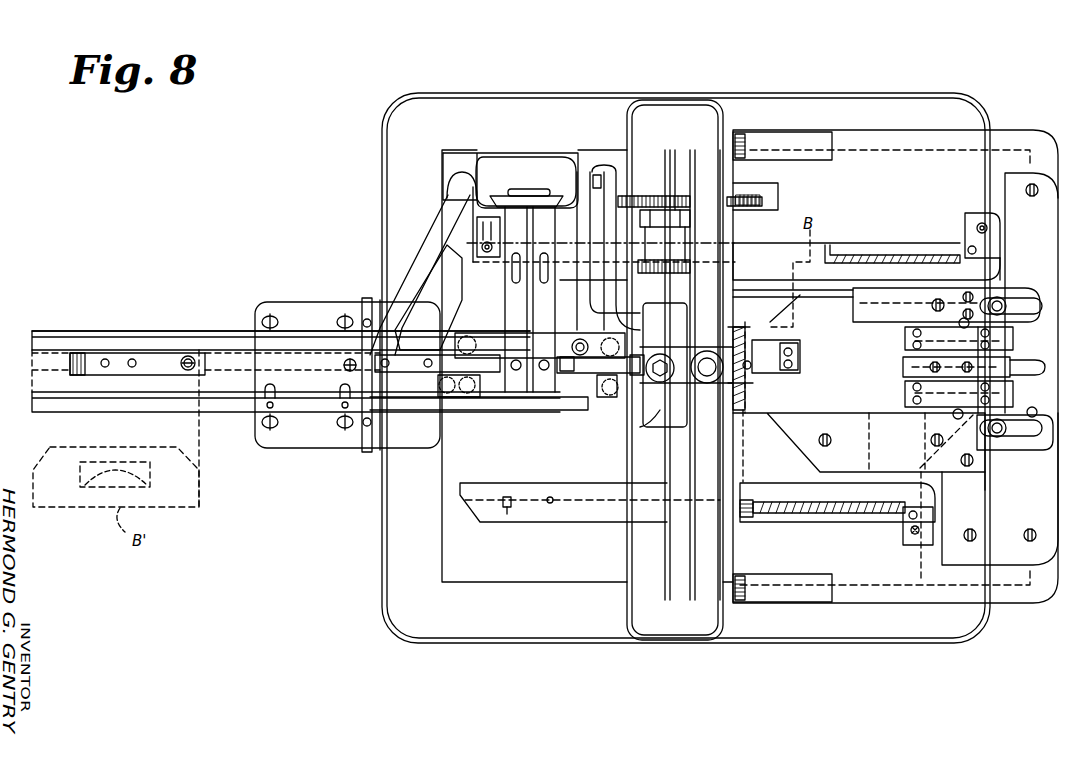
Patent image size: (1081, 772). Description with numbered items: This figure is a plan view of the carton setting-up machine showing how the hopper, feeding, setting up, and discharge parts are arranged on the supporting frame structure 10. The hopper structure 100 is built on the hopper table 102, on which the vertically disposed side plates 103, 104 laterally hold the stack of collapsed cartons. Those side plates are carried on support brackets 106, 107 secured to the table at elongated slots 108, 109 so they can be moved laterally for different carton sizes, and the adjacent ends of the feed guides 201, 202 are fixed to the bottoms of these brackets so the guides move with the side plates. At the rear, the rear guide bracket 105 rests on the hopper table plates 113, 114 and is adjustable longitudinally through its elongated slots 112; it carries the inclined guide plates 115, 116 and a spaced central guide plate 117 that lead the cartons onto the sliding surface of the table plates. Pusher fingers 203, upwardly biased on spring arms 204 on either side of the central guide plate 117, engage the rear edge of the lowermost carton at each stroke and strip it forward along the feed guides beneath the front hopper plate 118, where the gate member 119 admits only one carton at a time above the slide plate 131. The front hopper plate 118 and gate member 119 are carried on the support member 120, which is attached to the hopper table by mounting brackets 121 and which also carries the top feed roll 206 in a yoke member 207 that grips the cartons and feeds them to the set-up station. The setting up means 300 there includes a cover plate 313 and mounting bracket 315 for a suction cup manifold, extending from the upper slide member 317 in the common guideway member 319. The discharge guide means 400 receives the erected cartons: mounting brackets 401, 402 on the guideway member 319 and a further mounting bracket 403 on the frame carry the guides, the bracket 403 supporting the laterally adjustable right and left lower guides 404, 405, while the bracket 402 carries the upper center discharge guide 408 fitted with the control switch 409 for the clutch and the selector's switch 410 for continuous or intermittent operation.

The supporting frame structure 10 is at (796, 81).
The hopper structure 100 is at (1012, 121).
The hopper table 102 is at (903, 128).
The hopper side plate 103 is at (893, 254).
The hopper side plate 104 is at (828, 513).
The rear guide bracket 105 is at (1050, 420).
The support bracket 106 is at (980, 213).
The support bracket 107 is at (912, 545).
The elongated slot 108 is at (1002, 248).
The elongated slot 109 is at (859, 497).
The elongated slot 112 is at (1020, 306).
The hopper table plate 113 is at (1048, 164).
The hopper table plate 114 is at (1002, 550).
The guide plate 115 is at (852, 296).
The guide plate 116 is at (952, 460).
The central guide plate 117 is at (903, 366).
The front hopper plate 118 is at (742, 326).
The gate member 119 is at (745, 383).
The support member 120 is at (705, 612).
The mounting bracket 121 is at (765, 140).
The slide plate 131 is at (767, 358).
The feed guide 201 is at (770, 236).
The feed guide 202 is at (606, 522).
The pusher finger 203 is at (930, 324).
The spring arm 204 is at (905, 338).
The top feed roll 206 is at (642, 405).
The yoke member 207 is at (650, 412).
The setting up means 300 is at (536, 139).
The cover plate 313 is at (497, 402).
The mounting bracket 315 is at (540, 395).
The upper slide member 317 is at (460, 190).
The guideway member 319 is at (491, 163).
The discharge guide means 400 is at (44, 322).
The mounting bracket 401 is at (604, 170).
The mounting bracket 402 is at (410, 262).
The mounting bracket 403 is at (265, 449).
The right lower guide 404 is at (222, 330).
The left lower guide 405 is at (226, 414).
The center discharge guide 408 is at (165, 352).
The control switch 409 is at (330, 322).
The selector's switch 410 is at (192, 350).